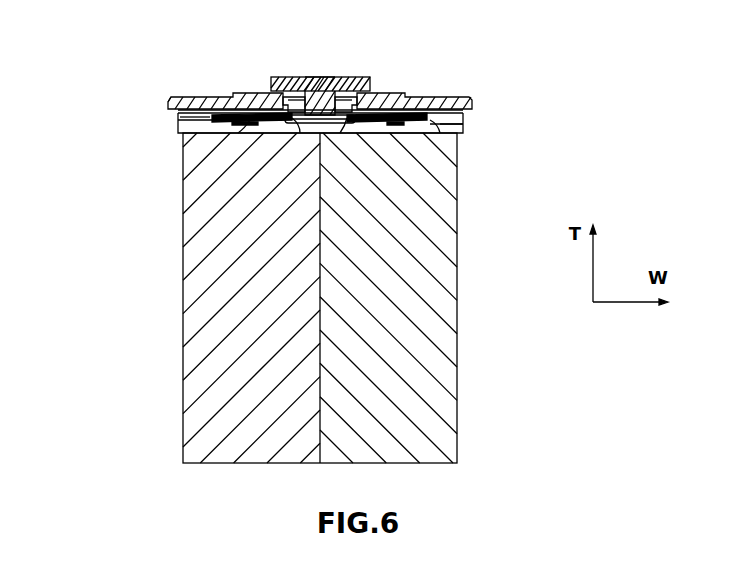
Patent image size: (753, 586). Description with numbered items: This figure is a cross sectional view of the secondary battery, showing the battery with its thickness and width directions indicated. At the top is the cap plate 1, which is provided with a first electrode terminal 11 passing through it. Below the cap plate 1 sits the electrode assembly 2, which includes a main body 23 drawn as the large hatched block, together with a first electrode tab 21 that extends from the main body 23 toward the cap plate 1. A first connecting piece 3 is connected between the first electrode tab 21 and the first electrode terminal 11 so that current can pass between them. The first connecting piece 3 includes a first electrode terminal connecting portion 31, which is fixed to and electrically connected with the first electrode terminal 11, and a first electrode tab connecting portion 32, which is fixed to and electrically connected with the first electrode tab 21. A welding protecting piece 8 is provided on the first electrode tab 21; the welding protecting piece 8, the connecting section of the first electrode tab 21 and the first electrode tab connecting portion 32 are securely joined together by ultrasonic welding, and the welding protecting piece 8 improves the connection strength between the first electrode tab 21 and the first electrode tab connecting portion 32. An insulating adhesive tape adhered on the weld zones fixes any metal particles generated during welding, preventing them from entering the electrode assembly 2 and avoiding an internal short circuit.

The cap plate 1 is at (192, 102).
The electrode assembly 2 is at (75, 188).
The first connecting piece 3 is at (327, 69).
The welding protecting piece 8 is at (463, 127).
The first electrode terminal 11 is at (318, 78).
The first electrode tab 21 is at (230, 117).
The main body 23 is at (203, 250).
The first electrode terminal connecting portion 31 is at (352, 93).
The first electrode tab connecting portion 32 is at (228, 114).